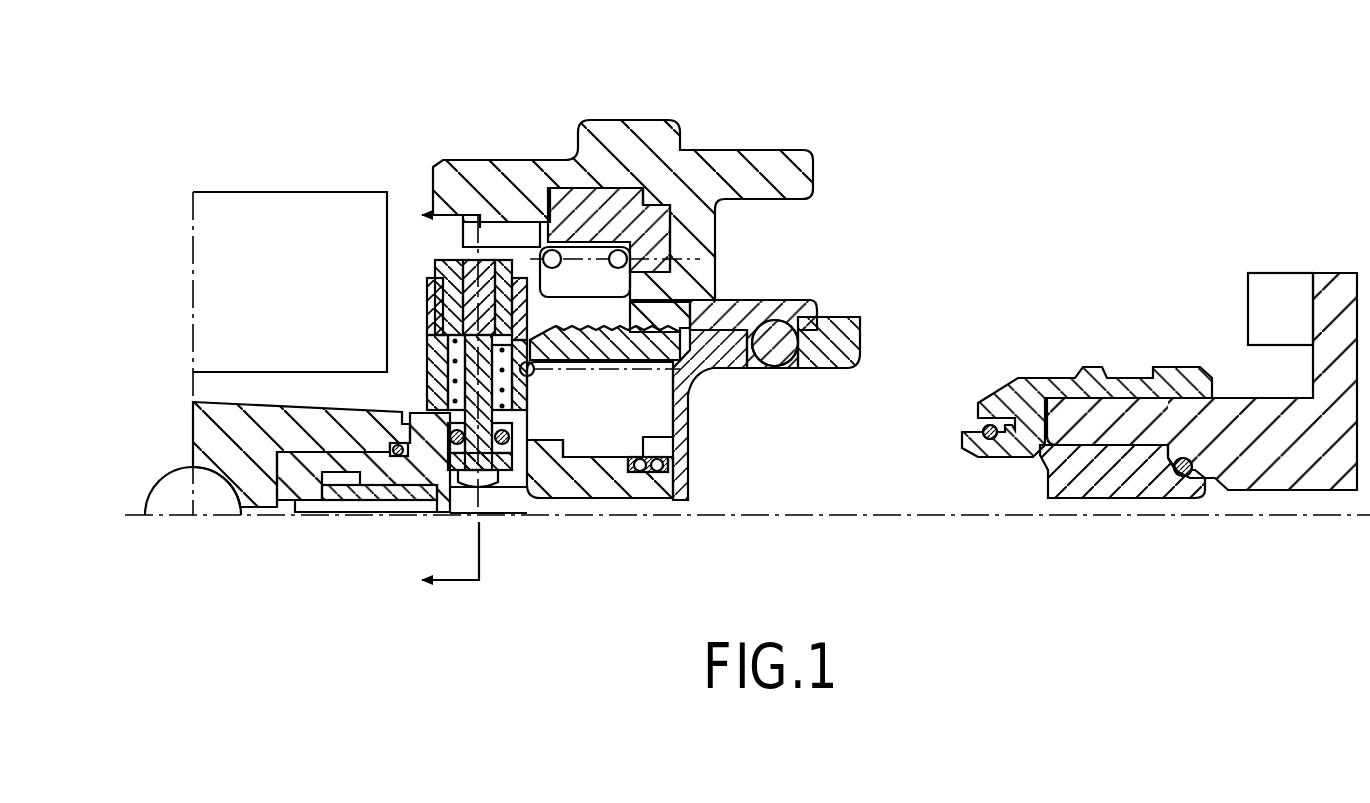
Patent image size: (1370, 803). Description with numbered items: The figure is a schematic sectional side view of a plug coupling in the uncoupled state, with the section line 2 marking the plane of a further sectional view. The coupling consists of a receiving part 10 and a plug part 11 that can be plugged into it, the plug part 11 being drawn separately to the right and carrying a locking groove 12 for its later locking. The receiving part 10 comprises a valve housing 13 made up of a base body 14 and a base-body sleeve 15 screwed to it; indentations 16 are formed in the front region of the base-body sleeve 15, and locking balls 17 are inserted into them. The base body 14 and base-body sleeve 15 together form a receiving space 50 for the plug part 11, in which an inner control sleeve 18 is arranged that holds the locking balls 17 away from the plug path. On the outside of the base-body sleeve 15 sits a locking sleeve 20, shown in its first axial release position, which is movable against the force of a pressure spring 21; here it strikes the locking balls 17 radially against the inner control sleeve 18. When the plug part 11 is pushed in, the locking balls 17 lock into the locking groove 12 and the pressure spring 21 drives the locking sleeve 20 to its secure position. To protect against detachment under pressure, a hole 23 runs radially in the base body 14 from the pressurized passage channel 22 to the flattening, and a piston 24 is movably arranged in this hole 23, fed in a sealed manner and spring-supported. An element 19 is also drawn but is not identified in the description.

The receiving part 10 is at (390, 157).
The plug part 11 is at (1196, 321).
The locking groove 12 is at (1133, 382).
The valve housing 13 is at (432, 300).
The base body 14 is at (512, 490).
The base-body sleeve 15 is at (758, 300).
The indentations 16 is at (805, 372).
The locking balls 17 is at (775, 357).
The inner control sleeve 18 is at (686, 425).
The cylinder 19 is at (603, 372).
The locking sleeve 20 is at (808, 300).
The pressure spring 21 is at (482, 178).
The passage channel 22 is at (548, 505).
The hole 23 is at (452, 347).
The piston 24 is at (452, 383).
The receiving space 50 is at (637, 423).
The section line 2- 2 is at (437, 399).